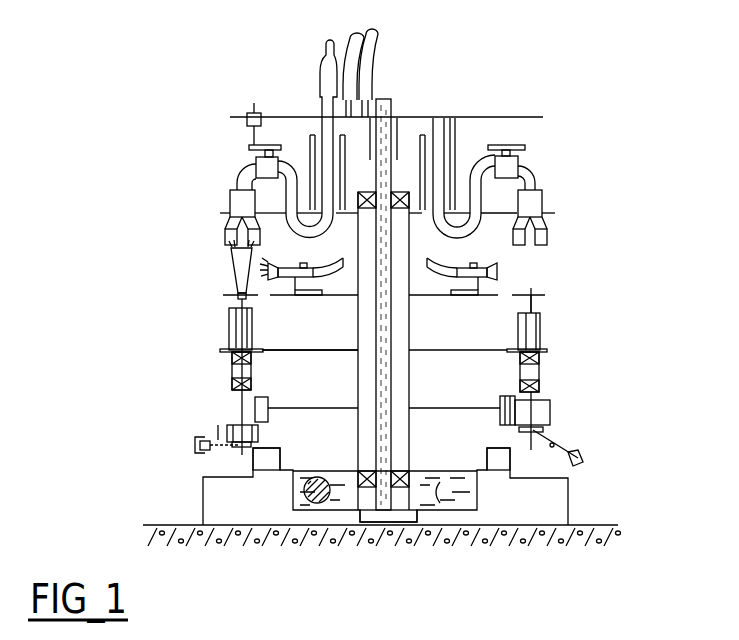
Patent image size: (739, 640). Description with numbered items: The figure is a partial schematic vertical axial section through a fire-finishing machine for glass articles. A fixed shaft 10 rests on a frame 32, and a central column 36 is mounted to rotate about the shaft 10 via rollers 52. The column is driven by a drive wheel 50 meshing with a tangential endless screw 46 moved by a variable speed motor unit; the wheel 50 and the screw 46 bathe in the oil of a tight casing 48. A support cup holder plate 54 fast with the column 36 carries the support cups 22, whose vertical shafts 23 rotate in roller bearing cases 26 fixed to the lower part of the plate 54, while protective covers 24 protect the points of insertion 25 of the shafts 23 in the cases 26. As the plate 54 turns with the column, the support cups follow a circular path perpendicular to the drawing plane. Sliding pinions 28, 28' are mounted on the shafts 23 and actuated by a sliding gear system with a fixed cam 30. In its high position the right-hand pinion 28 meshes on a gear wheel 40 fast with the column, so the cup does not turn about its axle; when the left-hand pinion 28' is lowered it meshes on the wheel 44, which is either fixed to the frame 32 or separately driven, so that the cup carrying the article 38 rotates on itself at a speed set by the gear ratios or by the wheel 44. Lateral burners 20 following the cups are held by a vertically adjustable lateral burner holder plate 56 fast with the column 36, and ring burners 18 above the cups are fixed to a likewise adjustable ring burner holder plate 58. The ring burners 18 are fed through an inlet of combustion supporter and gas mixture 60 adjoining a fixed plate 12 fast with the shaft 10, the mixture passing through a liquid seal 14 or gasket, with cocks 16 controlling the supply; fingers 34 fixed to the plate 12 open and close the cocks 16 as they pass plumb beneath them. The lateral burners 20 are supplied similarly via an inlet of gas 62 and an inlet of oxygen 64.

The fixed shaft 10 is at (391, 108).
The fixed plate 12 is at (452, 117).
The liquid seal 14 is at (458, 143).
The cocks 16 is at (512, 168).
The ring burners 18 is at (538, 198).
The lateral burners 20 is at (488, 259).
The support cups 22 is at (532, 292).
The vertical shafts 23 is at (529, 303).
The protective covers 24 is at (541, 324).
The points of insertion 25 is at (546, 350).
The roller bearing cases 26 is at (544, 373).
The sliding pinion 28 is at (553, 414).
The sliding pinion 28' is at (205, 377).
The fixed cam 30 is at (584, 460).
The frame 32 is at (570, 500).
The fingers 34 is at (250, 133).
The central column 36 is at (359, 275).
The article 38 is at (230, 268).
The gear wheel 40 is at (242, 408).
The wheel 44 is at (253, 458).
The tangential endless screw 46 is at (307, 503).
The tight casing 48 is at (472, 510).
The drive wheel 50 is at (348, 496).
The rollers 52 is at (397, 493).
The support cup holder plate 54 is at (307, 348).
The lateral burner holder plate 56 is at (262, 299).
The ring burner holder plate 58 is at (263, 224).
The inlet of combustion supporter/gas mixture 60 is at (327, 65).
The inlet of gas 62 is at (345, 36).
The inlet of oxygen 64 is at (373, 55).